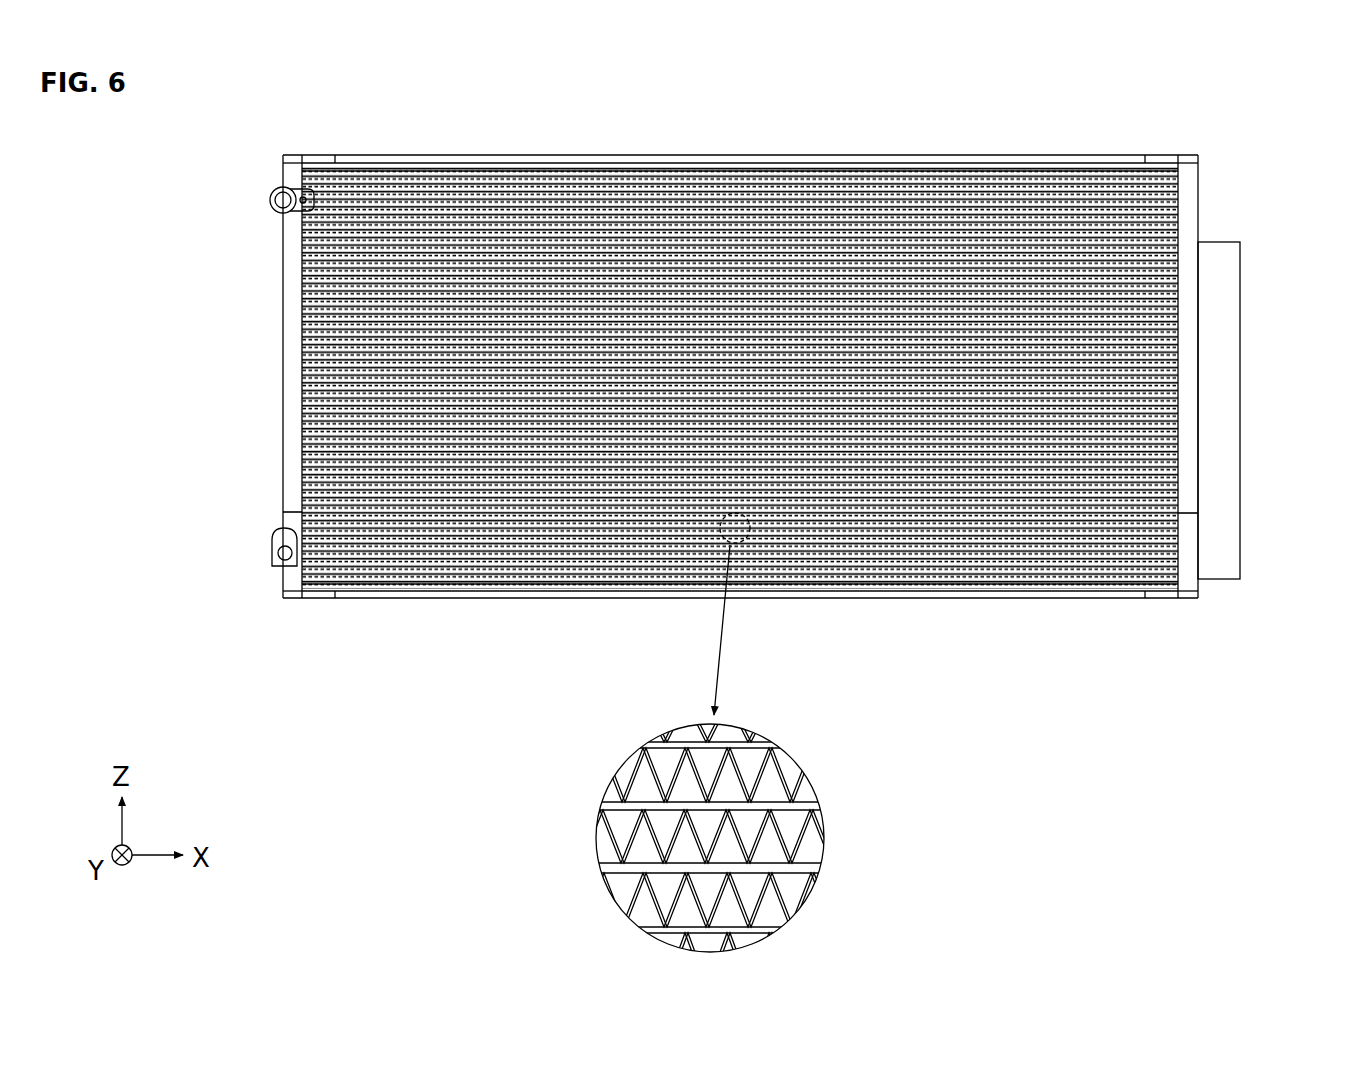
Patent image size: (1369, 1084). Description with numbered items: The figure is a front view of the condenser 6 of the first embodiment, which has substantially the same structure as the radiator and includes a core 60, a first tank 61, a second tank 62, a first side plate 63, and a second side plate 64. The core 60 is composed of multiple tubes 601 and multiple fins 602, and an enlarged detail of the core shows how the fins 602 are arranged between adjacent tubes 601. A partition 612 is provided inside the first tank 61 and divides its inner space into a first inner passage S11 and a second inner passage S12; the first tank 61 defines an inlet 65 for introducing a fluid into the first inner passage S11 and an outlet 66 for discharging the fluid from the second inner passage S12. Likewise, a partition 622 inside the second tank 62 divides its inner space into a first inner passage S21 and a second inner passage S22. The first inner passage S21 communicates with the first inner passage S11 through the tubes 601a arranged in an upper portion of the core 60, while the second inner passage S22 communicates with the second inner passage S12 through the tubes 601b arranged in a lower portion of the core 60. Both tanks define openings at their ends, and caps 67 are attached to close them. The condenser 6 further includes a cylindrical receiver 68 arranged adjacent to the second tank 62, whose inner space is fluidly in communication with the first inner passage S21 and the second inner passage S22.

The condenser 6 is at (1235, 111).
The core 60 is at (745, 158).
The tubes 601 is at (612, 866).
The tubes arranged in an upper portion of the core 601a is at (634, 235).
The tubes arranged in a lower portion of the core 601b is at (640, 565).
The fins 602 is at (802, 846).
The first tank 61 is at (250, 397).
The partition 612 is at (290, 504).
The second tank 62 is at (1271, 376).
The partition 622 is at (1190, 502).
The first side plate 63 is at (831, 155).
The second side plate 64 is at (887, 600).
The inlet 65 is at (268, 195).
The outlet 66 is at (268, 550).
The caps 67 is at (290, 153).
The receiver 68 is at (1240, 420).
The first inner passage S11 is at (290, 452).
The second inner passage S12 is at (290, 585).
The first inner passage S21 is at (1190, 447).
The second inner passage S22 is at (1190, 548).